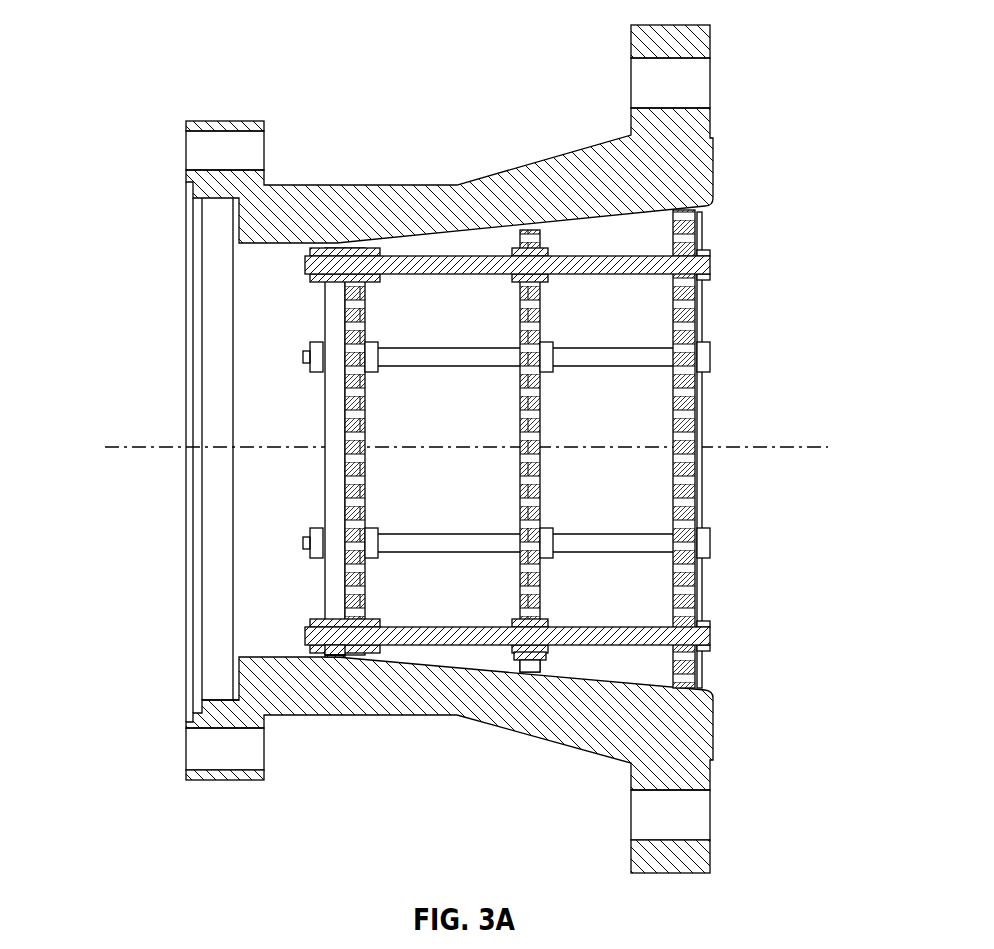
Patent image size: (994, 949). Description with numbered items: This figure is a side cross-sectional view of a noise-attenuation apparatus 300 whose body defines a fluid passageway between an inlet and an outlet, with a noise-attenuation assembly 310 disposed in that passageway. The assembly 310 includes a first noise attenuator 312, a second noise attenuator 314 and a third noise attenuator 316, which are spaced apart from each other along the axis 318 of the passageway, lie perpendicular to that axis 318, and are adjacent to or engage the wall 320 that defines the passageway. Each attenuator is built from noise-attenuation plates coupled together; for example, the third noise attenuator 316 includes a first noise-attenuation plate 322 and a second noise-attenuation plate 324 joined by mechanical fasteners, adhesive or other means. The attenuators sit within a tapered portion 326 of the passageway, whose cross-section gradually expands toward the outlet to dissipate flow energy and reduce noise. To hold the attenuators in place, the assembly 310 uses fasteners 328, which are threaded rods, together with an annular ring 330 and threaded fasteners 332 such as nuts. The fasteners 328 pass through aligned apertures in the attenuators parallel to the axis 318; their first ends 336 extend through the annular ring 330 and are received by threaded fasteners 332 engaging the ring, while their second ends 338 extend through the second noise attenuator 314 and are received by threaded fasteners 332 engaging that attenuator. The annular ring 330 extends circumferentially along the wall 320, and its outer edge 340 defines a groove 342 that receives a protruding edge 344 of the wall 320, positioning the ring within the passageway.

The noise-attenuation apparatus 300 is at (142, 58).
The noise-attenuation assembly 310 is at (740, 259).
The first noise attenuator 312 is at (352, 266).
The second noise attenuator 314 is at (692, 415).
The third noise attenuator 316 is at (516, 236).
The axis 318 is at (147, 445).
The wall 320 is at (290, 236).
The first noise-attenuation plate 322 is at (520, 668).
The second noise-attenuation plate 324 is at (535, 673).
The tapered portion 326 is at (482, 670).
The fasteners 328 is at (622, 276).
The annular ring 330 is at (335, 596).
The threaded fasteners 332 is at (300, 355).
The first ends 336 is at (300, 543).
The second ends 338 is at (712, 541).
The outer edge 340 is at (312, 650).
The groove 342 is at (328, 657).
The protruding edge 344 is at (337, 654).